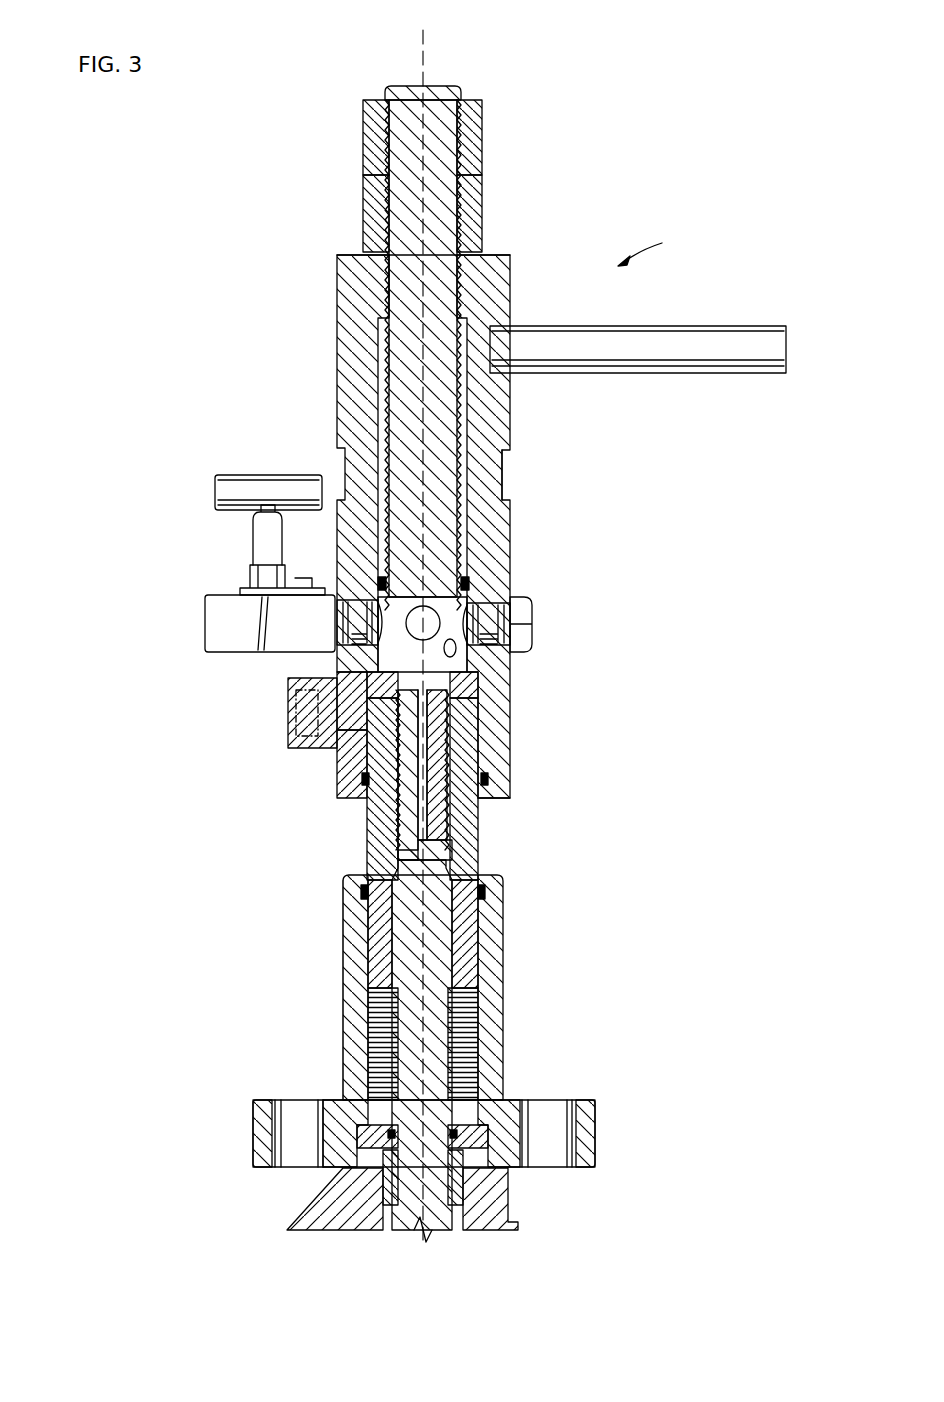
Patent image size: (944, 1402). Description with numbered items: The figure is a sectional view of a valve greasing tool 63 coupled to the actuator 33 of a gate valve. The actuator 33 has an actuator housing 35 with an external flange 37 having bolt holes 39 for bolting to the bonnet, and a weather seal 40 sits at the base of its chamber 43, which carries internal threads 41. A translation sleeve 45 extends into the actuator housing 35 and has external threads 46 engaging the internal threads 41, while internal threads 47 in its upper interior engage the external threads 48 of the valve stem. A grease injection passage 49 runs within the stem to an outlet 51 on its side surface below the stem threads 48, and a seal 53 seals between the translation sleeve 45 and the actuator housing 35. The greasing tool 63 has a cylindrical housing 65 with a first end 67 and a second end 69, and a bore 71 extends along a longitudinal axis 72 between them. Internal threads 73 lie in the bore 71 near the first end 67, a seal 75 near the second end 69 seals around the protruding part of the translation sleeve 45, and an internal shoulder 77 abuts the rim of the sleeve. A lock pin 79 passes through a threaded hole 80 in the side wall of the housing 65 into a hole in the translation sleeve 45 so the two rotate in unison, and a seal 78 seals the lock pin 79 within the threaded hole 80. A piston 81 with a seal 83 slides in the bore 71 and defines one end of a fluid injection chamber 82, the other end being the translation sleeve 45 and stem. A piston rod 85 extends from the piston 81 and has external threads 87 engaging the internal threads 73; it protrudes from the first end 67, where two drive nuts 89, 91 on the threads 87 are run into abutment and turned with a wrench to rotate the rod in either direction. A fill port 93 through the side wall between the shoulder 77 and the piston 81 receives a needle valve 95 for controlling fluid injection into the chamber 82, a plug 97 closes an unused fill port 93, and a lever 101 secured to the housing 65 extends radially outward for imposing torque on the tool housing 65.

The actuator 33 is at (546, 971).
The actuator housing 35 is at (352, 897).
The external flange 37 is at (595, 1130).
The bolt holes 39 is at (292, 1160).
The weather seal 40 is at (343, 1100).
The internal threads 41 is at (380, 1020).
The chamber 43 is at (470, 1025).
The translation sleeve 45 is at (395, 862).
The external threads 46 is at (372, 955).
The internal threads 47 is at (405, 805).
The external threads 48 is at (480, 720).
The grease injection passage 49 is at (432, 745).
The outlet 51 is at (440, 838).
The seal 53 is at (485, 893).
The valve greasing tool 63 is at (657, 248).
The cylindrical housing 65 is at (510, 512).
The first end 67 is at (500, 258).
The second end 69 is at (488, 800).
The bore 71 is at (466, 483).
The longitudinal axis 72 is at (426, 50).
The internal threads 73 is at (390, 272).
The seal 75 is at (488, 778).
The internal shoulder 77 is at (484, 683).
The seal 78 is at (339, 742).
The lock pin 79 is at (288, 710).
The threaded hole 80 is at (339, 762).
The piston 81 is at (478, 552).
The fluid injection chamber 82 is at (432, 651).
The seal 83 is at (468, 583).
The piston rod 85 is at (435, 408).
The external threads 87 is at (388, 355).
The drive nut 89 is at (482, 145).
The drive nut 91 is at (482, 200).
The fill port 93 is at (340, 630).
The needle valve 95 is at (217, 604).
The plug 97 is at (532, 612).
The lever 101 is at (708, 340).